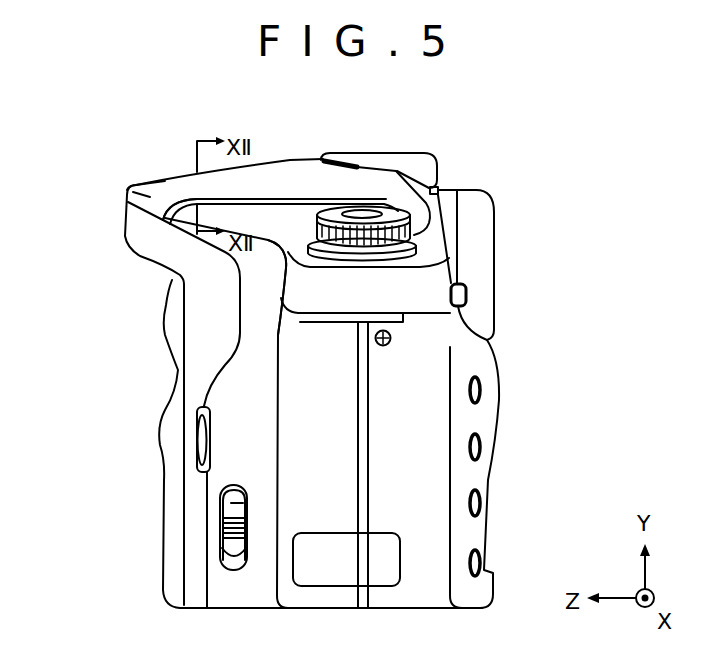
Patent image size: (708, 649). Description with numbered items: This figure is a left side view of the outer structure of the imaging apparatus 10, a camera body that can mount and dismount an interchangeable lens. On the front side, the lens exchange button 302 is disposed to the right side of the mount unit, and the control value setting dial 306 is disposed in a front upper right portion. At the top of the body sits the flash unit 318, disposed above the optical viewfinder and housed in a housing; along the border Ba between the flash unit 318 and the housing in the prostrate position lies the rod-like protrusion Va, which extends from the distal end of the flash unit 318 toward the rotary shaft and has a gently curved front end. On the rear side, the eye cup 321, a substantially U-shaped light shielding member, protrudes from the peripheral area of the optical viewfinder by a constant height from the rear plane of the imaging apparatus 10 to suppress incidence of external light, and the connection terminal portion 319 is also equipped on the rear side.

The imaging apparatus 10 is at (137, 160).
The flash unit 318 is at (148, 197).
The protrusion Va is at (172, 207).
The control value setting dial 306 is at (309, 244).
The connection terminal portion 319 is at (391, 149).
The eye cup 321 is at (474, 260).
The lens exchange button 302 is at (197, 455).
The border Ba is at (276, 250).